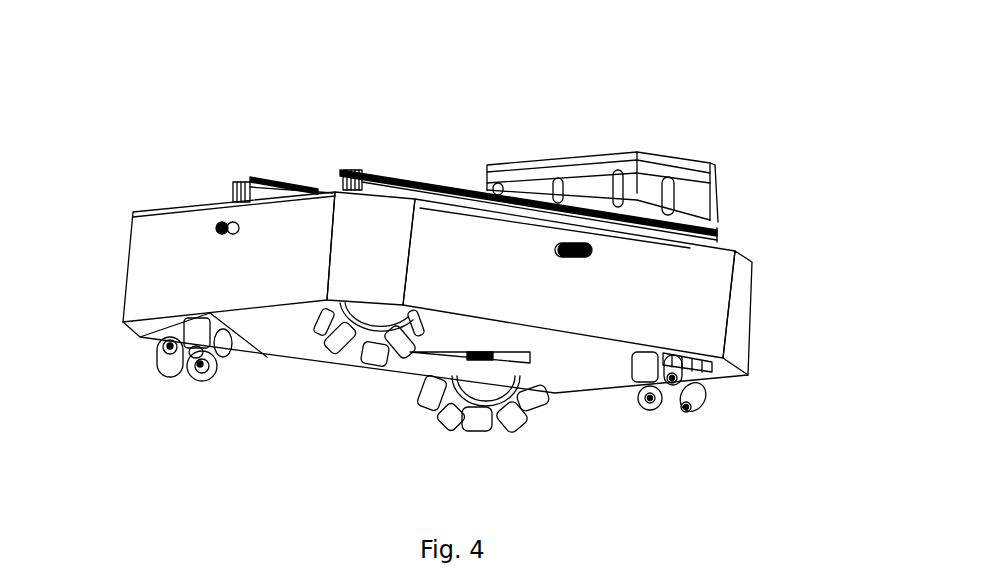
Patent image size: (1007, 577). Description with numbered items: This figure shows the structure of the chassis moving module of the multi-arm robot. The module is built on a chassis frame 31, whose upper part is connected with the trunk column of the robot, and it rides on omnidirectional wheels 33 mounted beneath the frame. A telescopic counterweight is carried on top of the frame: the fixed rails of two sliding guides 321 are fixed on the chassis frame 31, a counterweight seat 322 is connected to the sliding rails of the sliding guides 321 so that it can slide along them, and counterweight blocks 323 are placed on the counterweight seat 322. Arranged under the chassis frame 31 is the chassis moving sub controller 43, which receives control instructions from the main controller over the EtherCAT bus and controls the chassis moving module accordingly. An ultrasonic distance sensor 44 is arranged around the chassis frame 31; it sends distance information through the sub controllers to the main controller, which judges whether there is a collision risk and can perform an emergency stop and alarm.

The chassis frame 31 is at (397, 305).
The sliding guides 321 is at (475, 142).
The counterweight seat 322 is at (653, 117).
The counterweight blocks 323 is at (550, 111).
The omnidirectional wheels 33 is at (553, 438).
The chassis moving sub controller 43 is at (395, 386).
The ultrasonic distance sensor 44 is at (702, 297).